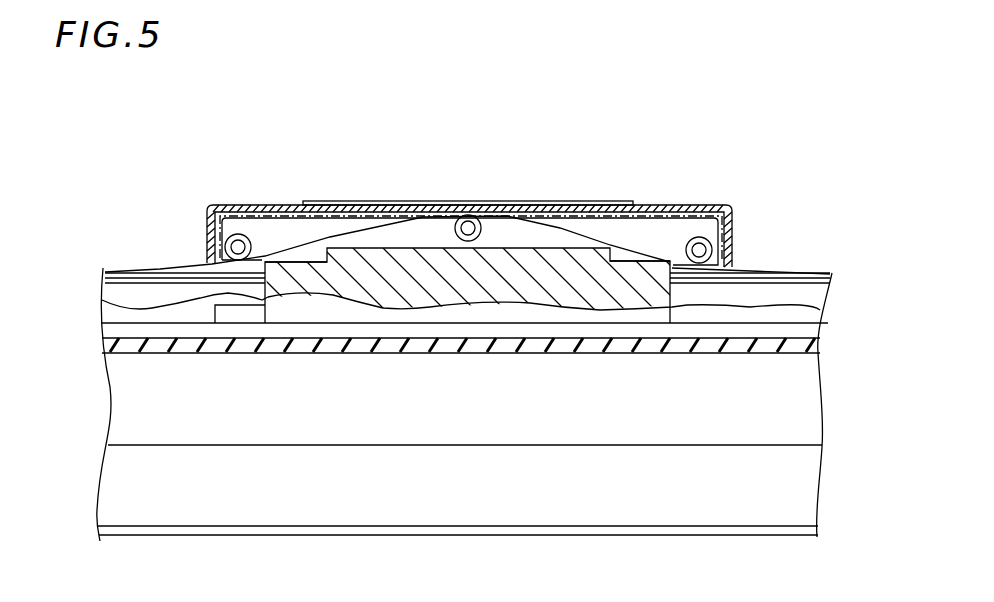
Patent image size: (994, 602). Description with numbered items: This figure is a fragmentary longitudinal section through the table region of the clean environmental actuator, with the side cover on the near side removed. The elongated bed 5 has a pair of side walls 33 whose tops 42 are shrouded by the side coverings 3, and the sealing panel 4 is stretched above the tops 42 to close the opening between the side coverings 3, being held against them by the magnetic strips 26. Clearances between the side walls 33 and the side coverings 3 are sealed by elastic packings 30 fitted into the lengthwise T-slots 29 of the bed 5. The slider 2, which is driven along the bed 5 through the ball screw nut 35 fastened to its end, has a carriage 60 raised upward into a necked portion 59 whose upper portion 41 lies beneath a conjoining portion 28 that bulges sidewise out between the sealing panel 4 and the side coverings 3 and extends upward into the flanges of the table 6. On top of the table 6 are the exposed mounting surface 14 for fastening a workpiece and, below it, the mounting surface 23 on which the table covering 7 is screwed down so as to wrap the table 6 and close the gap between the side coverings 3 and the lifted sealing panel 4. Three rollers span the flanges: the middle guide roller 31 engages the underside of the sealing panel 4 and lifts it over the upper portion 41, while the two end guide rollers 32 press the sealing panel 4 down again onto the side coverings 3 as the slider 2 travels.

The slider 2 is at (638, 283).
The side coverings 3 is at (155, 298).
The sealing panel 4 is at (390, 218).
The bed 5 is at (432, 497).
The table 6 is at (303, 227).
The table covering 7 is at (277, 207).
The mounting surface 14 is at (563, 200).
The mounting surface for the table covering 23 is at (258, 209).
The magnetic strips 26 is at (737, 280).
The conjoining portion 28 is at (443, 250).
The T-slots 29 is at (728, 355).
The packings 30 is at (667, 355).
The guide roller 31 is at (469, 215).
The guide rollers 32 is at (238, 233).
The side walls 33 is at (546, 420).
The ball screw nut 35 is at (228, 308).
The upper portion 41 is at (308, 260).
The tops 42 is at (785, 327).
The necked portion 59 is at (497, 257).
The carriage 60 is at (592, 295).